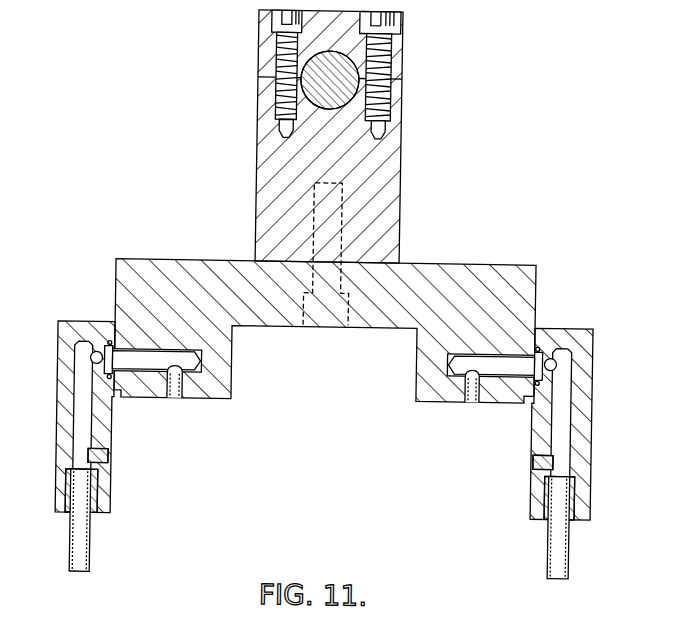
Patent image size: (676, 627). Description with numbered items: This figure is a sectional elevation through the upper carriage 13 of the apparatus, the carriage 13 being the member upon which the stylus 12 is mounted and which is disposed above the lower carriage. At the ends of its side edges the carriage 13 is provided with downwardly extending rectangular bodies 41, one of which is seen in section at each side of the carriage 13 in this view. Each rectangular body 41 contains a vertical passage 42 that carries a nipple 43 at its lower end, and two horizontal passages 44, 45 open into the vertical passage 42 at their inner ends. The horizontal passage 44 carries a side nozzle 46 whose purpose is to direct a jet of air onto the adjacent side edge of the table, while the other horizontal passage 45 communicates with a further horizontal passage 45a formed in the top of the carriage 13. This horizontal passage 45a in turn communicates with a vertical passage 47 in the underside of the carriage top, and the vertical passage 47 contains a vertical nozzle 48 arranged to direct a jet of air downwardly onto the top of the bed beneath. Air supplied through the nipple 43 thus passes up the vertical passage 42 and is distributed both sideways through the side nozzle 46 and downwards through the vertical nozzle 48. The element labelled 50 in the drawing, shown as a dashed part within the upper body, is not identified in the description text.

The stylus 12 is at (256, 210).
The locating pin 50 is at (383, 210).
The carriage 13 is at (537, 262).
The downwardly extending rectangular body 41 is at (66, 337).
The vertical passage 42 is at (83, 431).
The nipple 43 is at (88, 576).
The horizontal passage 44 is at (101, 482).
The horizontal passage 45 is at (92, 365).
The horizontal passage 45a is at (185, 361).
The side nozzle 46 is at (111, 460).
The vertical passage 47 is at (192, 372).
The vertical nozzle 48 is at (178, 401).